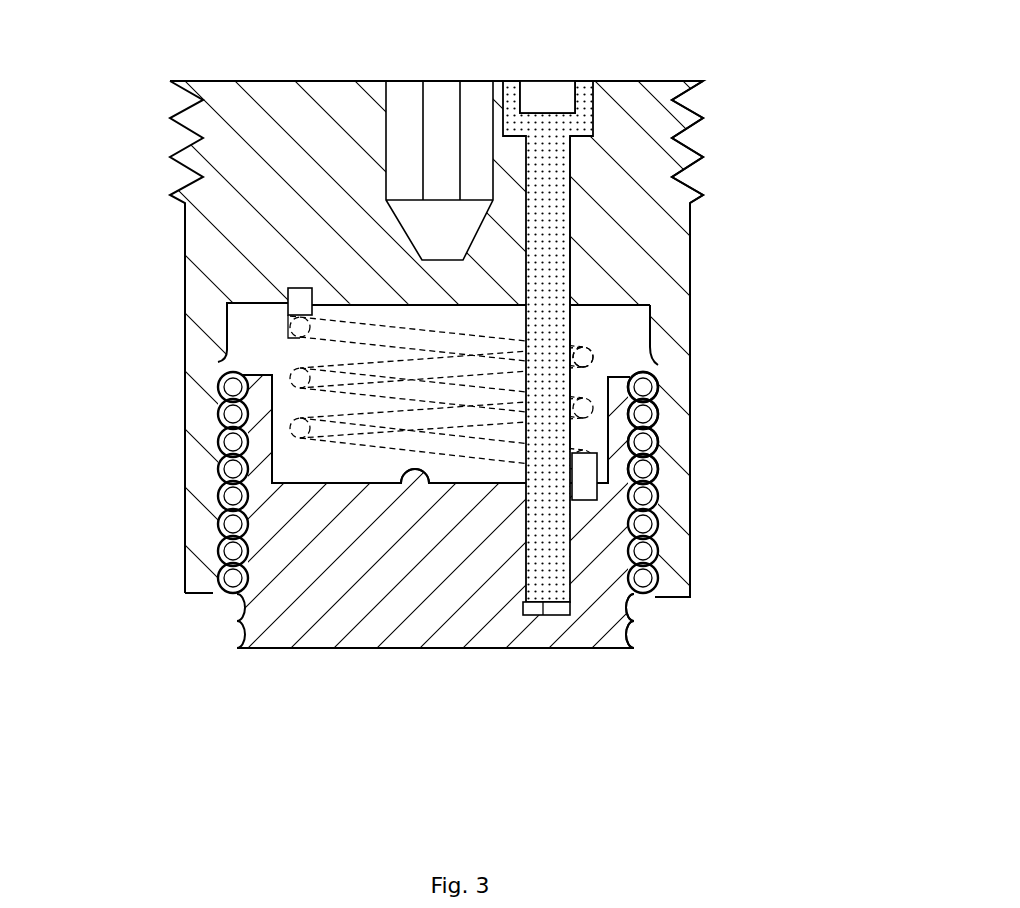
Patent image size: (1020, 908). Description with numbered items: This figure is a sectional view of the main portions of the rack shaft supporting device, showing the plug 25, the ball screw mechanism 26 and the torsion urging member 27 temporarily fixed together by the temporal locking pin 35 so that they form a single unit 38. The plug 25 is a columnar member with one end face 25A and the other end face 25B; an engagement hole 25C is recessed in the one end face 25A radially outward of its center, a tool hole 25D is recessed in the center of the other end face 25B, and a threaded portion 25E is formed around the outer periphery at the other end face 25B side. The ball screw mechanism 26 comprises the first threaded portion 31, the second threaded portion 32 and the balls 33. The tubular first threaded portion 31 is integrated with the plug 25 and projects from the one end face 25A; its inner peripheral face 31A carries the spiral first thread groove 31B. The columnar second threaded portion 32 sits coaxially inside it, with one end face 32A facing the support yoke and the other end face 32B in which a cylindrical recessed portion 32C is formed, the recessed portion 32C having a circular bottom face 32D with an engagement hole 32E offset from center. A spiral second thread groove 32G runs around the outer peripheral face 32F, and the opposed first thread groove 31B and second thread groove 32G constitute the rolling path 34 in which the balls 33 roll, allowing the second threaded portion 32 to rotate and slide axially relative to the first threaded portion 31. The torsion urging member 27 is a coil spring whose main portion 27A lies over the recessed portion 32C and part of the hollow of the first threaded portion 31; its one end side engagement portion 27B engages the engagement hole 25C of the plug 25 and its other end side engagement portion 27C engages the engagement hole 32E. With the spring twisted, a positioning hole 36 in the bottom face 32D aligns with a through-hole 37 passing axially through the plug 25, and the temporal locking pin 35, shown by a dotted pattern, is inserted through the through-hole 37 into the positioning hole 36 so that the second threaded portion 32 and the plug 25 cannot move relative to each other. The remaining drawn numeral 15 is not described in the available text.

The fluid flow 15 is at (255, 667).
The plug 25 is at (325, 97).
The one end face 25A is at (253, 305).
The other end face 25B is at (260, 81).
The engagement hole 25C is at (288, 303).
The tool hole 25D is at (442, 140).
The threaded portion 25E is at (695, 132).
The ball screw mechanism 26 is at (311, 652).
The torsion urging member 27 is at (322, 448).
The main portion 27A is at (593, 347).
The one end side engagement portion 27B is at (305, 288).
The other end side engagement portion 27C is at (657, 492).
The first threaded portion 31 is at (680, 553).
The inner peripheral face 31A is at (650, 313).
The first thread groove 31B is at (647, 416).
The second threaded portion 32 is at (363, 632).
The one end face 32A is at (483, 650).
The other end face 32B is at (258, 375).
The recessed portion 32C is at (352, 466).
The bottom face 32D is at (418, 497).
The engagement hole 32E is at (600, 486).
The outer peripheral face 32F is at (647, 607).
The second thread groove 32G is at (641, 388).
The balls 33 is at (233, 442).
The rolling path 34 is at (232, 556).
The temporal locking pin 35 is at (550, 150).
The positioning hole 36 is at (562, 616).
The through-hole 37 is at (570, 193).
The unit 38 is at (393, 688).